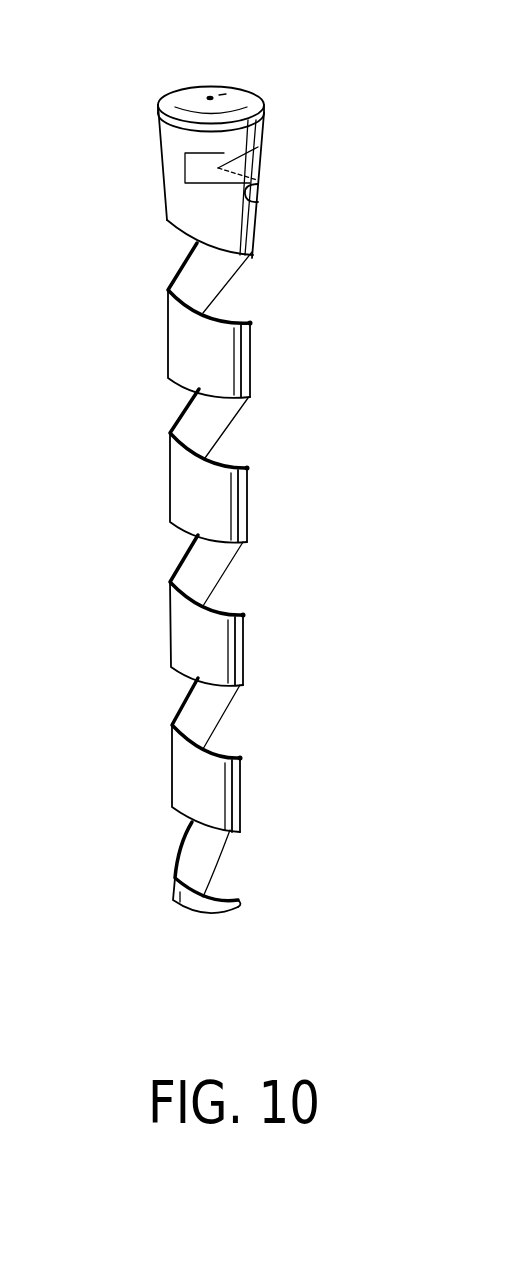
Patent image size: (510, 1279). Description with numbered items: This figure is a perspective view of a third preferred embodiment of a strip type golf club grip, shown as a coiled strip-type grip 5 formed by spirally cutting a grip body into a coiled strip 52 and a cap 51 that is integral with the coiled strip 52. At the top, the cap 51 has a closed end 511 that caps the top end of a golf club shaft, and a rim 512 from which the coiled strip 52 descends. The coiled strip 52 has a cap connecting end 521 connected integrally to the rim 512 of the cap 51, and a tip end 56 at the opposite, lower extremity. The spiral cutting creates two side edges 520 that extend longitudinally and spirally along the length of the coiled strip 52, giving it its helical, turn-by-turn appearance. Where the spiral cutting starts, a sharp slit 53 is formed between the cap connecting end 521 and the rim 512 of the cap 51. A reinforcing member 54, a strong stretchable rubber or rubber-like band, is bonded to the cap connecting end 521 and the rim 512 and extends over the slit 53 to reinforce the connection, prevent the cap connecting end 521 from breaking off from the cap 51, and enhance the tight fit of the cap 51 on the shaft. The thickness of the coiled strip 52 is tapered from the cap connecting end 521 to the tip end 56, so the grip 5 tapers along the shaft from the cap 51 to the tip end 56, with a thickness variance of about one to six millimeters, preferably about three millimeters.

The coiled strip-type grip 5 is at (155, 452).
The cap 51 is at (165, 87).
The closed end 511 is at (240, 105).
The rim 512 is at (266, 124).
The coiled strip 52 is at (258, 237).
The side edges 520 is at (250, 323).
The cap connecting end 521 is at (187, 198).
The slit 53 is at (252, 200).
The reinforcing member 54 is at (240, 150).
The tip end 56 is at (220, 913).